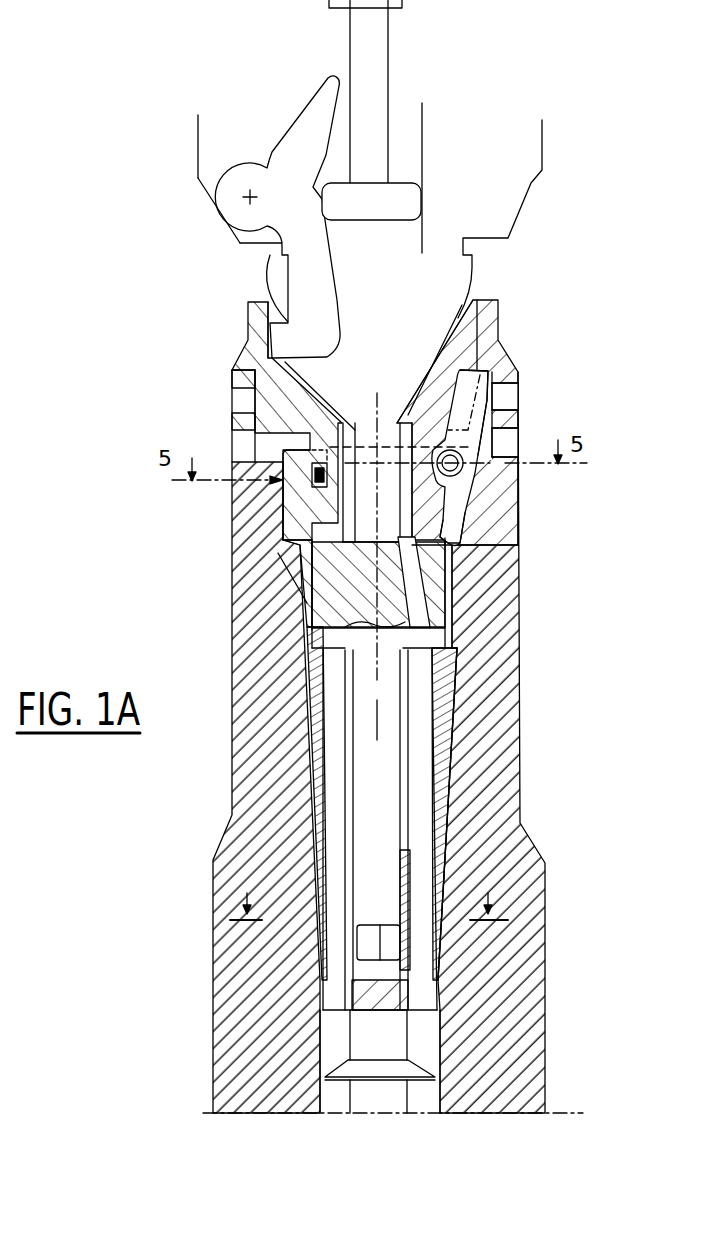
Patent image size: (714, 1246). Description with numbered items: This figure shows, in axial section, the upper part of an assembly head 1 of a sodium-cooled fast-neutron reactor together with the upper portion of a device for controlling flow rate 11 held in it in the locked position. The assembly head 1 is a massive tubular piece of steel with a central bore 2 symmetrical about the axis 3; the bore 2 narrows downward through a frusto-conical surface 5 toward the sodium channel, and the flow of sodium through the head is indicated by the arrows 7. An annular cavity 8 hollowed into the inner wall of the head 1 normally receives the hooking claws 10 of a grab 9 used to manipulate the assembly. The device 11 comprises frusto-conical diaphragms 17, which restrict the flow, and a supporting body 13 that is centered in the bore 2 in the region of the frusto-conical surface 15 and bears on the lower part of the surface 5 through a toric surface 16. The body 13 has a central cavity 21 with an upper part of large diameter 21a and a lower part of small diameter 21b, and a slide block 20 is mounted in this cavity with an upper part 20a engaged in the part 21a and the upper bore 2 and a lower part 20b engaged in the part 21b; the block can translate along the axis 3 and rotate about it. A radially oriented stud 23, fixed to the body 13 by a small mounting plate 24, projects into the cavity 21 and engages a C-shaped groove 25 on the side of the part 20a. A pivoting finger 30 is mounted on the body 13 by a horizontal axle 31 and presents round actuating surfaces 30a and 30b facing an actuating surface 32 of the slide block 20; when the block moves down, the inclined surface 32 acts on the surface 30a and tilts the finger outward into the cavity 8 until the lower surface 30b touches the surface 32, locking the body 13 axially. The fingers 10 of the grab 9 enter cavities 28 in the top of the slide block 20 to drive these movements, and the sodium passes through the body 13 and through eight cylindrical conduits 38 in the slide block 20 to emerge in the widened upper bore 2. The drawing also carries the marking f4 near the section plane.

The assembly head 1 is at (528, 888).
The central bore 2 is at (465, 318).
The axis 3 is at (385, 395).
The frusto-conical surface 5 is at (453, 720).
The arrows 7 is at (369, 924).
The annular cavity 8 is at (258, 378).
The grab 9 is at (531, 185).
The claws 10 is at (321, 272).
The device for controlling flow rate 11 is at (413, 1032).
The body 13 is at (445, 683).
The frusto-conical surface 15 is at (447, 540).
The toric surface 16 is at (325, 993).
The diaphragms 17 is at (347, 1068).
The slide block 20 is at (293, 415).
The upper part of large diameter 20a is at (458, 494).
The lower part of small diameter 20b is at (382, 800).
The central cavity 21 is at (425, 640).
The upper part of large diameter 21a is at (305, 610).
The lower part of small diameter 21b is at (355, 762).
The stud 23 is at (312, 478).
The mounting plate 24 is at (283, 557).
The C-shaped groove 25 is at (305, 603).
The cavities 28 is at (268, 336).
The pivoting finger 30 is at (457, 496).
The actuating surface 30a is at (478, 373).
The actuating surface 30b is at (437, 528).
The axle 31 is at (462, 463).
The actuating surface 32 is at (453, 403).
The cylindrical conduits 38 is at (422, 608).
The force arrow f4 is at (191, 450).